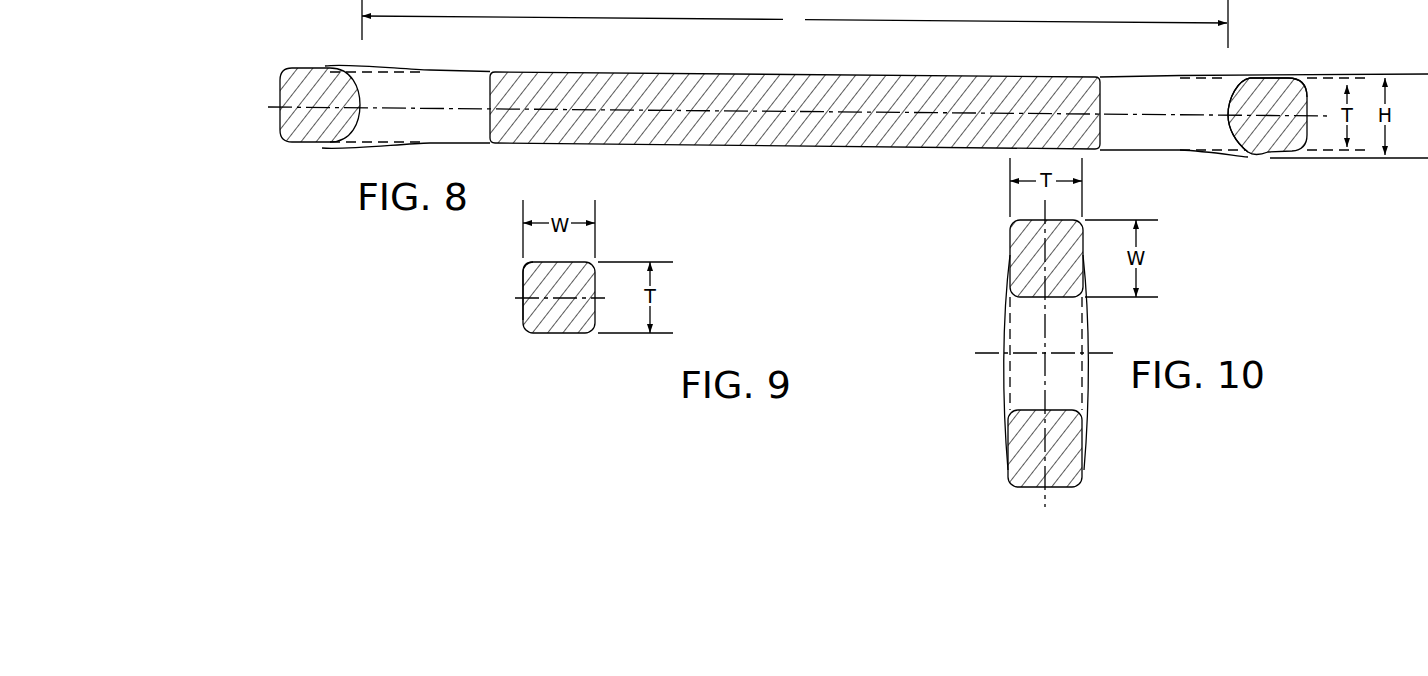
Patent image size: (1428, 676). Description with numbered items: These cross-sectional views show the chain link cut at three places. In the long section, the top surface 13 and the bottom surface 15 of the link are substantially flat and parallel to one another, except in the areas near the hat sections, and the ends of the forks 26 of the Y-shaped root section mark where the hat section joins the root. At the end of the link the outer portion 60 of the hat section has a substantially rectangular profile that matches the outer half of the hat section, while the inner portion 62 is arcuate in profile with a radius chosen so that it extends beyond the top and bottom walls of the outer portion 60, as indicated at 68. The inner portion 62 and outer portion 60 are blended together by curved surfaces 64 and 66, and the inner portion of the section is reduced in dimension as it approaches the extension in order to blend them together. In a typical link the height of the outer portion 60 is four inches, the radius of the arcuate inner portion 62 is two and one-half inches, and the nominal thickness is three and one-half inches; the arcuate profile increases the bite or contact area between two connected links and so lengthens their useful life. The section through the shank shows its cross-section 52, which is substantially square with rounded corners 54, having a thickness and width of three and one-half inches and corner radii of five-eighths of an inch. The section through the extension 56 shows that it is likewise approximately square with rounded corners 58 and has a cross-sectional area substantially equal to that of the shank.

In FIG. 8, the top surface 13 is at (687, 72).
In FIG. 8, the wire core 15 is at (760, 145).
In FIG. 8, the fork 26 is at (795, 24).
In FIG. 9, the cross-section 52 is at (583, 322).
In FIG. 9, the rounded corners 54 is at (524, 330).
In FIG. 10, the flattened end portion 56 is at (1070, 455).
In FIG. 10, the rounded corners 58 is at (1008, 480).
In FIG. 8, the outer portion 60 is at (1277, 140).
In FIG. 8, the inner portion 62 is at (1230, 97).
In FIG. 8, the curved surface 64 is at (1283, 77).
In FIG. 8, the curved surface 66 is at (1267, 72).
In FIG. 8, the extension beyond walls 68 is at (1253, 74).